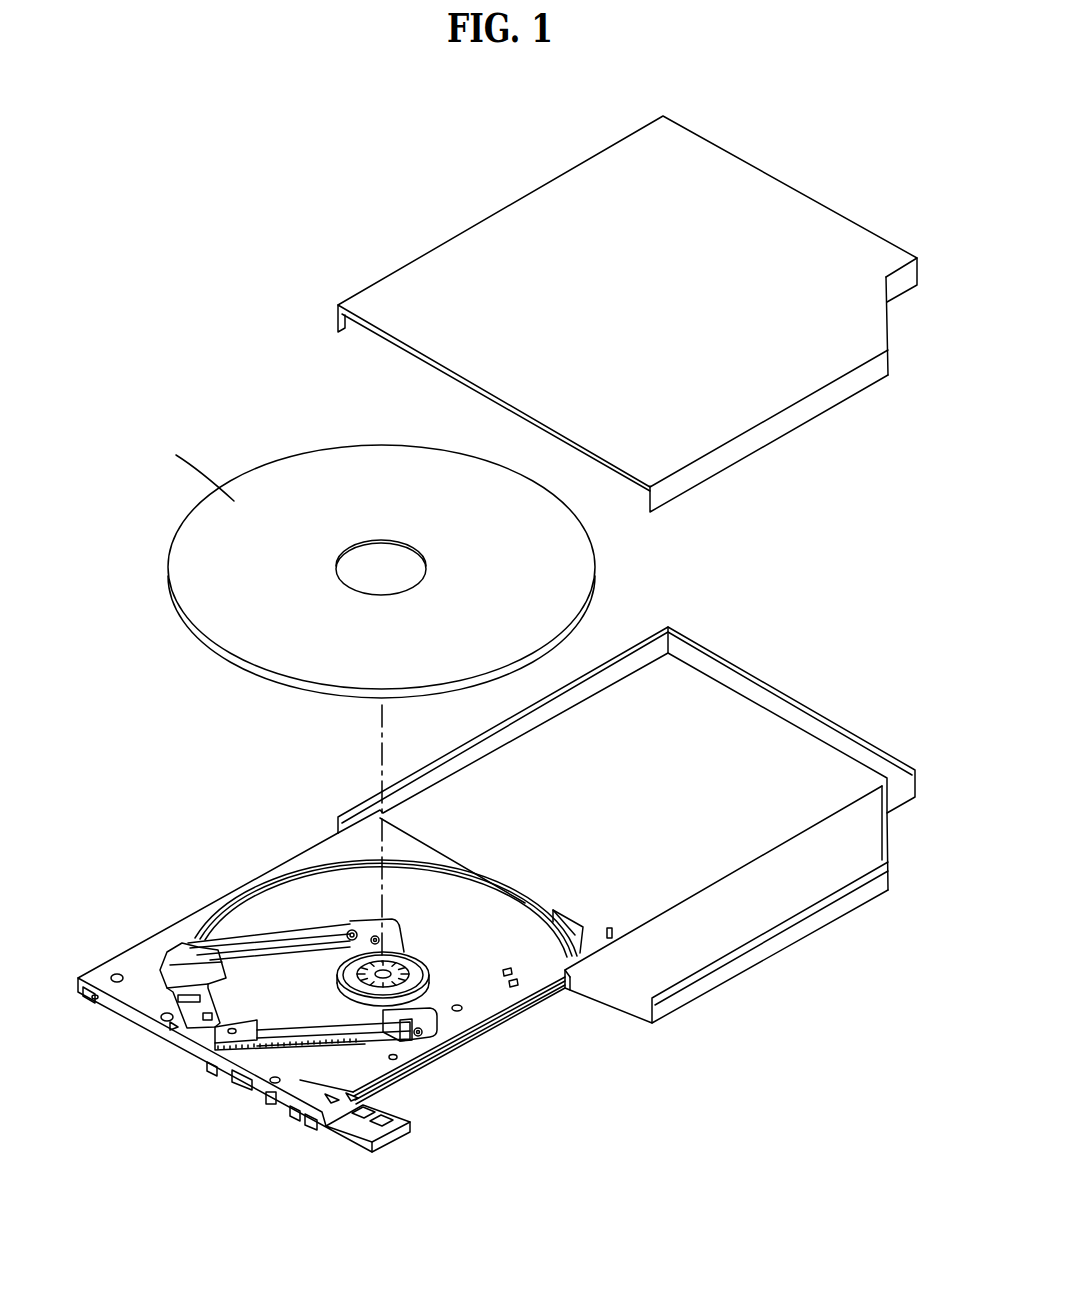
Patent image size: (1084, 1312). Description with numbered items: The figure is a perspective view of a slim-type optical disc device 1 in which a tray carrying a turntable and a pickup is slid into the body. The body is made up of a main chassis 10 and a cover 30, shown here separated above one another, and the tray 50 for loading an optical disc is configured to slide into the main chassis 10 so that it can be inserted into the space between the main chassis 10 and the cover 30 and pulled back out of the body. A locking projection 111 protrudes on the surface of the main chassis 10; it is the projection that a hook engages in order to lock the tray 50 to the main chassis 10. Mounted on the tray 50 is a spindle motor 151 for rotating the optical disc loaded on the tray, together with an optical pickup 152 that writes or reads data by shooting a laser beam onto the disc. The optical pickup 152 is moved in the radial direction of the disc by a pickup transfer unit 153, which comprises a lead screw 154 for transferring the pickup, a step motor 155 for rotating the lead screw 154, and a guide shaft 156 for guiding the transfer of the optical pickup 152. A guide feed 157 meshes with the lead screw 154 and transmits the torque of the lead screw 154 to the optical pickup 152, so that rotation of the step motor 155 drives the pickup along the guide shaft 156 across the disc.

The optical disc device 1 is at (313, 158).
The cover 30 is at (782, 158).
The main chassis 10 is at (788, 972).
The locking projection 111 is at (622, 938).
The tray 50 is at (512, 1028).
The spindle motor 151 is at (382, 970).
The optical pickup 152 is at (172, 943).
The pickup transfer unit 153 is at (522, 1117).
The lead screw 154 is at (350, 1046).
The step motor 155 is at (398, 1034).
The guide shaft 156 is at (262, 943).
The guide feed 157 is at (217, 1037).